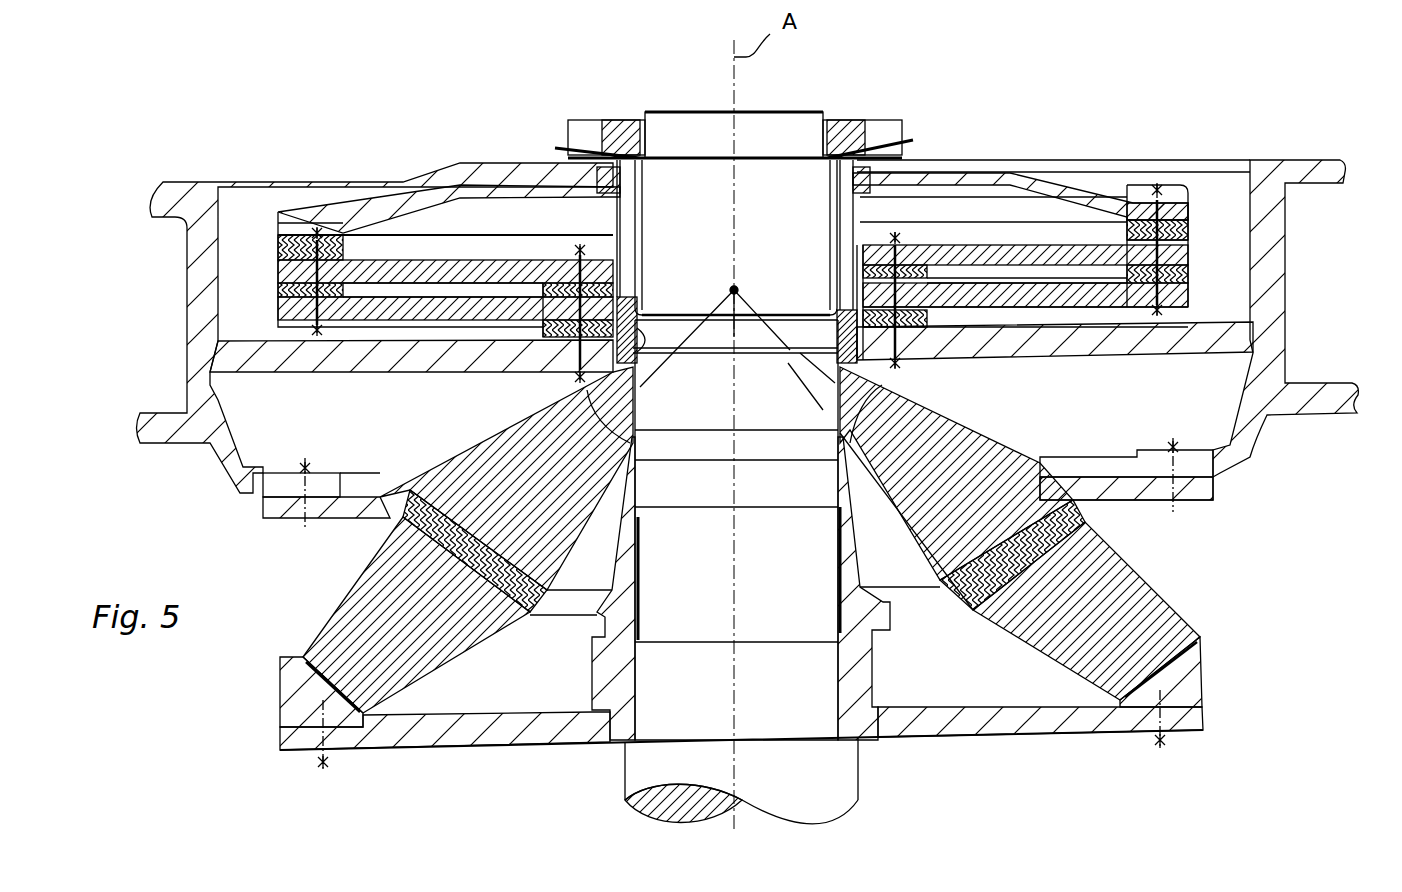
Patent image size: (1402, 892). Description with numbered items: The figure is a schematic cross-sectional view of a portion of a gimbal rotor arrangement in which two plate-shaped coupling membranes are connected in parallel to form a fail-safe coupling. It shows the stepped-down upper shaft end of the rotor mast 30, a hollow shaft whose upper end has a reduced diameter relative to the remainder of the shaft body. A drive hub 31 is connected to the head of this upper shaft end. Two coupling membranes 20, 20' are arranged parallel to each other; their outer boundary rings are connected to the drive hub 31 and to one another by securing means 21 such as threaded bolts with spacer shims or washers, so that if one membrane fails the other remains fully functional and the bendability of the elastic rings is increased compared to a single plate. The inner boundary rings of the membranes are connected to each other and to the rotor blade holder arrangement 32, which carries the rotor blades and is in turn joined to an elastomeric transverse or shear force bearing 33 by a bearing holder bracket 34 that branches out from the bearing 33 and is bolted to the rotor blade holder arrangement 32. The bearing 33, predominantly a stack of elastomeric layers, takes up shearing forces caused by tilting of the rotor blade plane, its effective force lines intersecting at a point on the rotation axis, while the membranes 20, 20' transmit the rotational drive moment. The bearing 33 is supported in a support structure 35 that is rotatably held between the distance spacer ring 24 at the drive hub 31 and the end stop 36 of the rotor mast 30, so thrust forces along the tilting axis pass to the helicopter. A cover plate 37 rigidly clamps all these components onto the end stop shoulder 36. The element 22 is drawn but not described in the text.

The coupling membrane 20 is at (756, 286).
The coupling membrane 20' is at (759, 300).
The securing means 21 is at (1190, 220).
The bearing ring 22 is at (927, 278).
The distance spacer ring 24 is at (610, 358).
The rotor mast 30 is at (840, 783).
The drive hub 31 is at (977, 167).
The rotor blade holder arrangement 32 is at (1283, 168).
The elastomeric transverse or shear force bearing 33 is at (1100, 550).
The bearing holder bracket 34 is at (1190, 492).
The support structure 35 is at (1193, 718).
The end stop 36 is at (853, 750).
The cover plate 37 is at (888, 127).